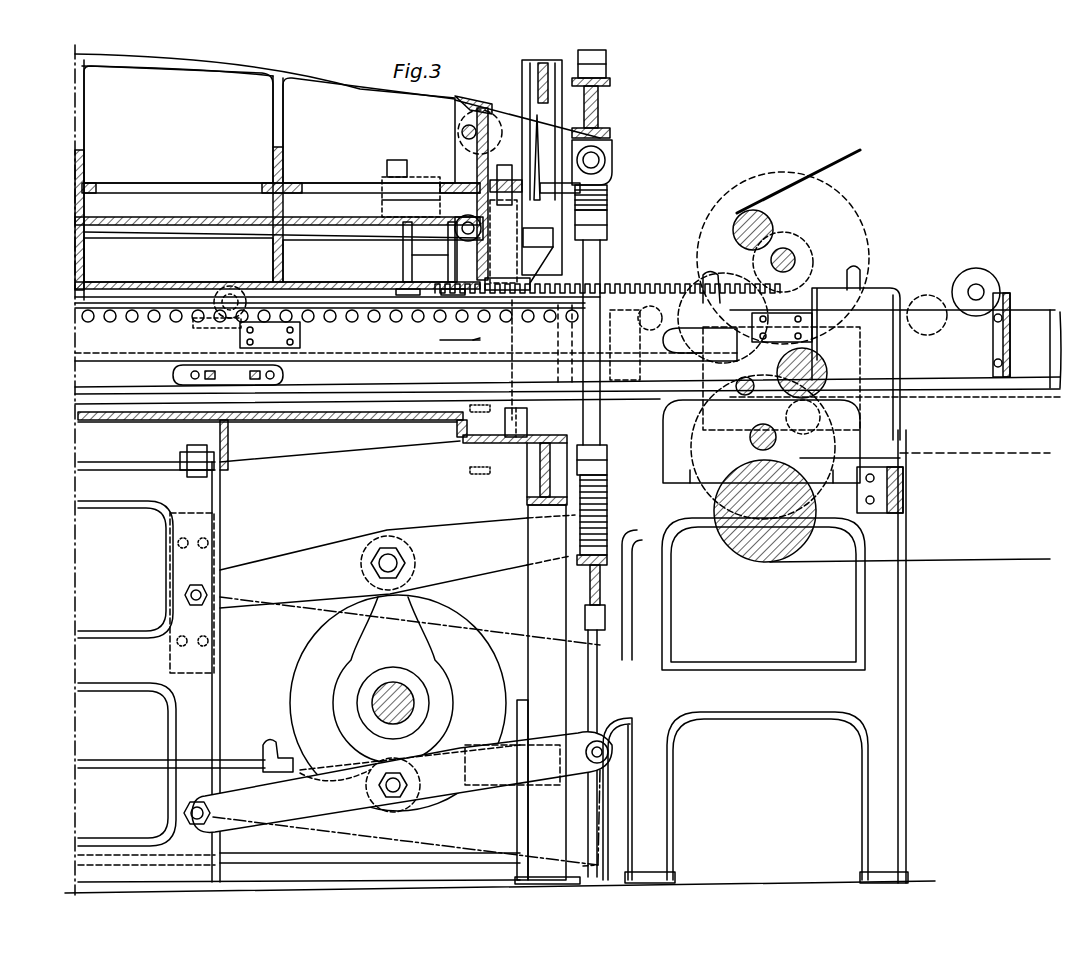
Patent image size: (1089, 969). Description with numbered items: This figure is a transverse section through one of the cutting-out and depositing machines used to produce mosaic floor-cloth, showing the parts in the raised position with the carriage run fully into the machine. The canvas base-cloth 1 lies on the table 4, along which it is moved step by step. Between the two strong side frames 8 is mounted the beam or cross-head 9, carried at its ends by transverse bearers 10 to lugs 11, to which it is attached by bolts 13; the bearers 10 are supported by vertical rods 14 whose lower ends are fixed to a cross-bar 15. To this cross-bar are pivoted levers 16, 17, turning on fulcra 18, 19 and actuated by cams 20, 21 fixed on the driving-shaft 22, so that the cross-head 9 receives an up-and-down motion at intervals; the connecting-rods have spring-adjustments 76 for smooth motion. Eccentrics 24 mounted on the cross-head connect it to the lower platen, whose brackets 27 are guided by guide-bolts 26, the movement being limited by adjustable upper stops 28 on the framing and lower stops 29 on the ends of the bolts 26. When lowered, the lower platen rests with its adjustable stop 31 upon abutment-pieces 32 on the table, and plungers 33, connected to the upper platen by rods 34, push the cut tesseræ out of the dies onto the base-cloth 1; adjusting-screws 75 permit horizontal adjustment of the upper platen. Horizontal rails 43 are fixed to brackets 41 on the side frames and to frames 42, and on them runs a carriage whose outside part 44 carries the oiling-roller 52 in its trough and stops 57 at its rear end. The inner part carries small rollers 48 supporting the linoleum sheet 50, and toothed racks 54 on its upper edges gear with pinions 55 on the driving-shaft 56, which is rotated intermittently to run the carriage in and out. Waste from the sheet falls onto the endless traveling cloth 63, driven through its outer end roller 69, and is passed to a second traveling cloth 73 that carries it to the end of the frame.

The base-cloth 1 is at (303, 422).
The table 4 is at (158, 422).
The side frames 8 is at (299, 672).
The cross-head 9 is at (337, 177).
The transverse bearers 10 is at (602, 112).
The lugs 11 is at (606, 152).
The bolts 13 is at (608, 188).
The vertical rods 14 is at (603, 258).
The cross-bar 15 is at (592, 588).
The lever 16 is at (408, 563).
The lever 17 is at (402, 799).
The fulcrum 18 is at (183, 596).
The fulcrum 19 is at (184, 813).
The cam 20 is at (398, 703).
The cam 21 is at (393, 680).
The driving-shaft 22 is at (410, 712).
The eccentrics 24 is at (482, 108).
The guide-bolts 26 is at (468, 216).
The brackets 27 is at (520, 258).
The upper stops 28 is at (608, 216).
The lower stops 29 is at (514, 310).
The adjustable stop 31 is at (528, 280).
The abutment-pieces 32 is at (520, 422).
The plungers 33 is at (470, 350).
The rods 34 is at (412, 248).
The brackets 41 is at (782, 315).
The frames 42 is at (781, 392).
The horizontal rails 43 is at (1022, 372).
The outside part of carriage 44 is at (426, 420).
The small rollers 48 is at (132, 322).
The linoleum sheet 50 is at (145, 292).
The oiling-roller 52 is at (643, 343).
The toothed racks 54 is at (690, 284).
The pinions 55 is at (797, 256).
The driving-shaft 56 is at (784, 242).
The stops 57 is at (1010, 300).
The endless traveling cloth 63 is at (338, 353).
The outer end roller 69 is at (822, 365).
The second traveling cloth 73 is at (950, 455).
The adjusting-screws 75 is at (505, 175).
The spring-adjustments 76 is at (608, 205).